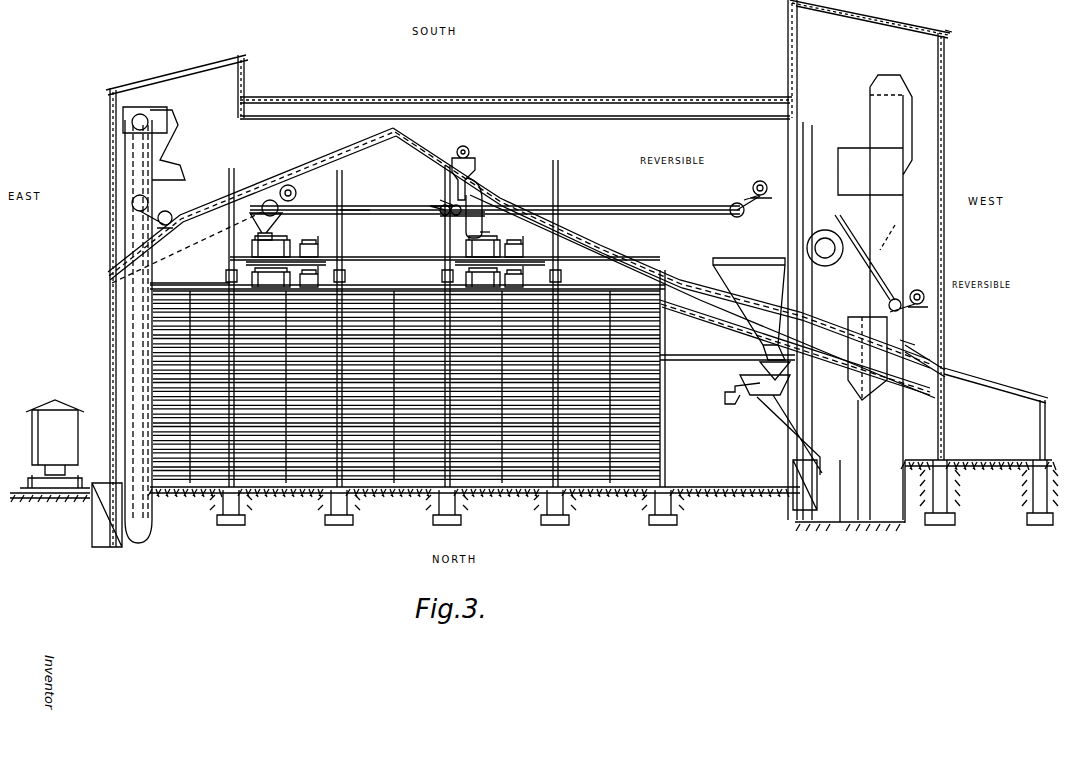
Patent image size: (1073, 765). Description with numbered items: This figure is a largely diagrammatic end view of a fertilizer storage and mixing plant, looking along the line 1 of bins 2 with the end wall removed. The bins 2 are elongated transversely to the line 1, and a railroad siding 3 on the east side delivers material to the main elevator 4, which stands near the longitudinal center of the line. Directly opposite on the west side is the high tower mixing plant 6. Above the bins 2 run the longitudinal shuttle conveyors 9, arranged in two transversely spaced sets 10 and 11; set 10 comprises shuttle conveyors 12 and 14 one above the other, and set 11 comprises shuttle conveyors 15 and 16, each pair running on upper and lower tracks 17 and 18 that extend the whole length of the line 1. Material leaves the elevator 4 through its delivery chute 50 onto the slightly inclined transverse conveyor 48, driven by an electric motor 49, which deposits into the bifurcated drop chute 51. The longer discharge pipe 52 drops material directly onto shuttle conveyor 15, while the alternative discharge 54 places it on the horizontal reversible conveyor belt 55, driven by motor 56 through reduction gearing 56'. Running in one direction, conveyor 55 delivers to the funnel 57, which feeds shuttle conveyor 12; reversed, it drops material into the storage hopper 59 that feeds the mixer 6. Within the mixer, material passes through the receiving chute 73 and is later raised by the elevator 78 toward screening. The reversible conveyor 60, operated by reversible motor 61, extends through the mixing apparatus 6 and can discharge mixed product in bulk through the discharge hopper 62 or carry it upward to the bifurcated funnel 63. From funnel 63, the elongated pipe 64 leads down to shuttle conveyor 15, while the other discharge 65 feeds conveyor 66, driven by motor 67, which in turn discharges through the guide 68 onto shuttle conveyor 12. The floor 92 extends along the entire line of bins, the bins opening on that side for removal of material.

The line of fertilizer bins 1 is at (662, 338).
The bin 2 is at (570, 296).
The railroad siding 3 is at (56, 508).
The main elevator 4 is at (120, 140).
The high tower mixing plant 6 is at (890, 82).
The longitudinal shuttle conveyors 9 is at (300, 242).
The set of conveyors 10 is at (246, 281).
The set of conveyors 11 is at (460, 256).
The shuttle conveyor 12 is at (250, 248).
The shuttle conveyor 14 is at (306, 274).
The shuttle conveyor 15 is at (484, 240).
The shuttle conveyor 16 is at (505, 277).
The tracks 17 is at (240, 270).
The tracks 18 is at (264, 277).
The conveyor 48 is at (278, 180).
The electric motor 49 is at (172, 215).
The delivery chute 50 is at (180, 178).
The bifurcated funnel or drop chute 51 is at (460, 152).
The discharge pipe 52 is at (468, 230).
The alternative discharge 54 is at (455, 216).
The transverse conveyor belt 55 is at (394, 207).
The electric motor 56 is at (760, 180).
The reduction gearing 56' is at (737, 191).
The funnel 57 is at (284, 228).
The storage hopper 59 is at (770, 258).
The reversible conveyor 60 is at (789, 318).
The reversible motor 61 is at (922, 282).
The discharge hopper 62 is at (926, 358).
The funnel 63 is at (490, 176).
The discharge pipe 64 is at (500, 192).
The discharge 65 is at (442, 200).
The conveyor 66 is at (355, 207).
The motor 67 is at (322, 185).
The funnel or guide 68 is at (240, 236).
The receiving chute or funnel 73 is at (792, 487).
The elevator 78 is at (460, 283).
The floor 92 is at (722, 487).